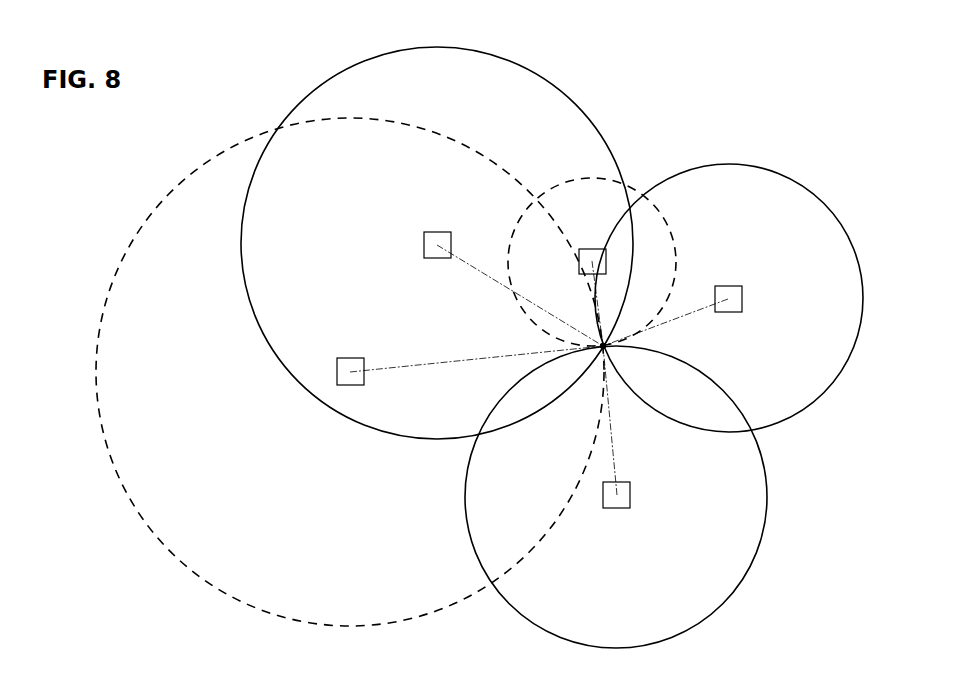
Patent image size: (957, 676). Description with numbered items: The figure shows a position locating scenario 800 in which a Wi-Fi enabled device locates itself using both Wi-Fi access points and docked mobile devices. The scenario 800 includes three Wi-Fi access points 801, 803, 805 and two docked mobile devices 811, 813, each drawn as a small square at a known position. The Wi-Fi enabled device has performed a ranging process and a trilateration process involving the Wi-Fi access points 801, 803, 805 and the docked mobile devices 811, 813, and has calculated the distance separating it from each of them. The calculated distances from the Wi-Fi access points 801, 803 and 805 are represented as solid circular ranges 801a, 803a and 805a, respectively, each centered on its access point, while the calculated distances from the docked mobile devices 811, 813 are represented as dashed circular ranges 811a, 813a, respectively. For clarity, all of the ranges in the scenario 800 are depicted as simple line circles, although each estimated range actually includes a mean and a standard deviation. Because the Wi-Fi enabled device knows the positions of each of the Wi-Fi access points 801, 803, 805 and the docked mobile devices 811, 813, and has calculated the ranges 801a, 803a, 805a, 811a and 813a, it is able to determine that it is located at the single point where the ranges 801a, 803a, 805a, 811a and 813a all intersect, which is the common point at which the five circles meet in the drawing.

The position locating scenario 800 is at (154, 90).
The Wi-Fi access point 801 is at (440, 232).
The solid circular range 801a is at (323, 83).
The Wi-Fi access point 803 is at (741, 286).
The solid circular range 803a is at (722, 167).
The Wi-Fi access point 805 is at (628, 504).
The solid circular range 805a is at (683, 630).
The docked mobile device 811 is at (603, 250).
The dashed circular range 811a is at (590, 178).
The docked mobile device 813 is at (354, 358).
The dashed circular range 813a is at (390, 622).